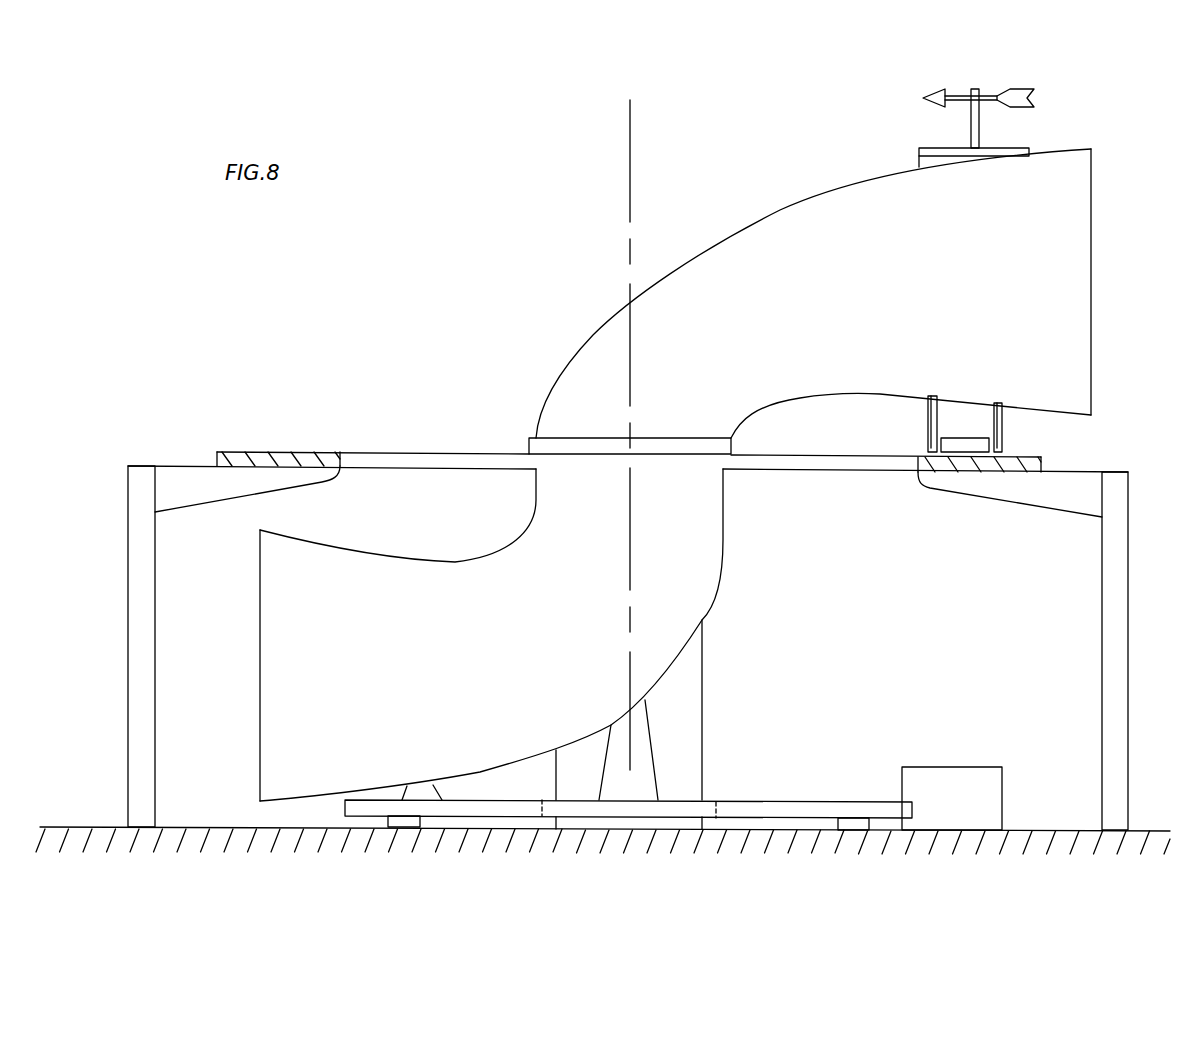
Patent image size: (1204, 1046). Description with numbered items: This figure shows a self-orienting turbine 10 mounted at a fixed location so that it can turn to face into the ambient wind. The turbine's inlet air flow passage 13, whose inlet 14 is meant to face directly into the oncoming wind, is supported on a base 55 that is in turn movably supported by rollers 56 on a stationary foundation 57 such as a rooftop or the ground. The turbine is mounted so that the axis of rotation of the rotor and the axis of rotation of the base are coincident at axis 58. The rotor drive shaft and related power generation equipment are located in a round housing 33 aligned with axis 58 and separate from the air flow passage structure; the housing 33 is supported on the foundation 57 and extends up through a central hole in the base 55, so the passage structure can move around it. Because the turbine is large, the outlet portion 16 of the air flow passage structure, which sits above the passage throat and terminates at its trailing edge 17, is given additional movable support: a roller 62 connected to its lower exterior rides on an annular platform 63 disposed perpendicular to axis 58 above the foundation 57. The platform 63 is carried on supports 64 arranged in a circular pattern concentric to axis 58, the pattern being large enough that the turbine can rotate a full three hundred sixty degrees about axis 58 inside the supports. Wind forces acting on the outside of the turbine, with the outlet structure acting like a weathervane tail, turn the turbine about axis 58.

The self-orienting turbine 10 is at (513, 310).
The inlet air flow passage 13 is at (355, 548).
The inlet 14 is at (258, 660).
The outlet portion 16 is at (850, 200).
The blade trailing edge 17 is at (1095, 283).
The round housing 33 is at (712, 685).
The base 55 is at (727, 808).
The rollers 56 is at (403, 820).
The stationary foundation 57 is at (250, 827).
The axis 58 is at (628, 167).
The roller 62 is at (975, 440).
The annular platform 63 is at (272, 452).
The supports 64 is at (140, 565).